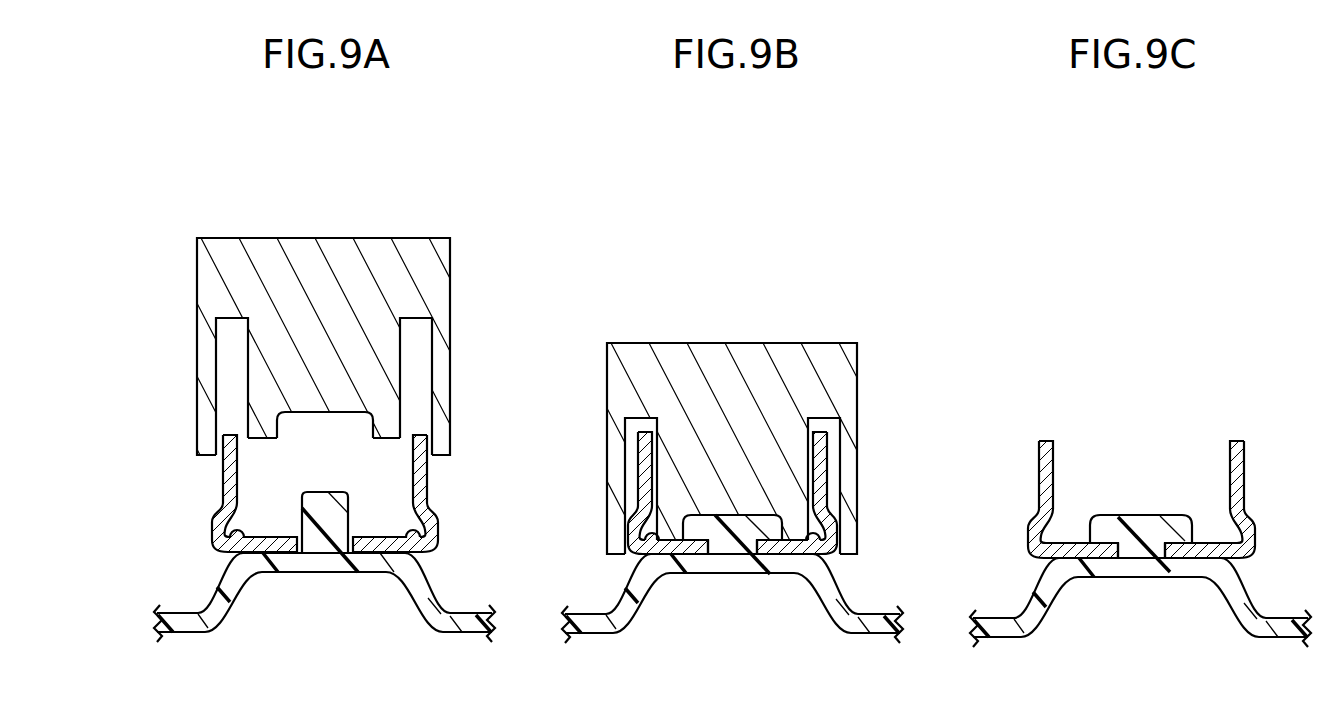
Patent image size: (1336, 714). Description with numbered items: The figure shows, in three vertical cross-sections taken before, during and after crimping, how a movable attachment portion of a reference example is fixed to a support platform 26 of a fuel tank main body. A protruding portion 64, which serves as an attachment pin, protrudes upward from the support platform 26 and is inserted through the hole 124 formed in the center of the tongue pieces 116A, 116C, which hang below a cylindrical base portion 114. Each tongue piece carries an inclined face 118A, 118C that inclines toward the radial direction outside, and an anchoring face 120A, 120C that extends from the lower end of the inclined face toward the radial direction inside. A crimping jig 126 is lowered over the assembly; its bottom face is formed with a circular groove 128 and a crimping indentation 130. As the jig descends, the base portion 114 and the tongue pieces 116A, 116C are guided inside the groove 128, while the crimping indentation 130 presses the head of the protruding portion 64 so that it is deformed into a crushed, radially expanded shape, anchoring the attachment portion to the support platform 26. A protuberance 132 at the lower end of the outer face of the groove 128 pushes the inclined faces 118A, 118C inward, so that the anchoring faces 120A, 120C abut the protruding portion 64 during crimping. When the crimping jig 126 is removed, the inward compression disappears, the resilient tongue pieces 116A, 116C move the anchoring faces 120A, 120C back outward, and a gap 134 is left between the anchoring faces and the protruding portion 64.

In FIG. 9A, the support platform 26 is at (281, 572).
In FIG. 9B, the support platform 26 is at (664, 575).
In FIG. 9C, the support platform 26 is at (1070, 570).
In FIG. 9A, the protruding portion 64 is at (341, 502).
In FIG. 9B, the protruding portion 64 is at (735, 527).
In FIG. 9C, the protruding portion 64 is at (1143, 515).
In FIG. 9A, the base portion 114 is at (326, 514).
In FIG. 9B, the base portion 114 is at (736, 478).
In FIG. 9C, the base portion 114 is at (1112, 445).
In FIG. 9A, the tongue piece 116A is at (465, 514).
In FIG. 9B, the tongue piece 116A is at (881, 496).
In FIG. 9C, the tongue piece 116A is at (1248, 445).
In FIG. 9A, the tongue piece 116C is at (186, 493).
In FIG. 9B, the tongue piece 116C is at (588, 493).
In FIG. 9C, the tongue piece 116C is at (1005, 479).
In FIG. 9A, the inclined face 118A is at (424, 520).
In FIG. 9B, the inclined face 118A is at (840, 505).
In FIG. 9C, the inclined face 118A is at (1250, 522).
In FIG. 9A, the inclined face 118C is at (217, 512).
In FIG. 9B, the inclined face 118C is at (632, 512).
In FIG. 9C, the inclined face 118C is at (1034, 523).
In FIG. 9A, the anchoring face 120A is at (403, 534).
In FIG. 9B, the anchoring face 120A is at (824, 537).
In FIG. 9C, the anchoring face 120A is at (1210, 542).
In FIG. 9A, the anchoring face 120C is at (230, 531).
In FIG. 9B, the anchoring face 120C is at (648, 530).
In FIG. 9C, the anchoring face 120C is at (1038, 505).
In FIG. 9A, the hole 124 is at (338, 552).
In FIG. 9B, the hole 124 is at (740, 556).
In FIG. 9C, the hole 124 is at (1150, 558).
In FIG. 9A, the crimping jig 126 is at (299, 239).
In FIG. 9B, the crimping jig 126 is at (708, 343).
In FIG. 9A, the groove 128 is at (223, 332).
In FIG. 9B, the groove 128 is at (630, 458).
In FIG. 9A, the crimping indentation 130 is at (303, 420).
In FIG. 9A, the protuberance 132 is at (432, 420).
In FIG. 9B, the protuberance 132 is at (830, 552).
In FIG. 9C, the gap 134 is at (1113, 515).